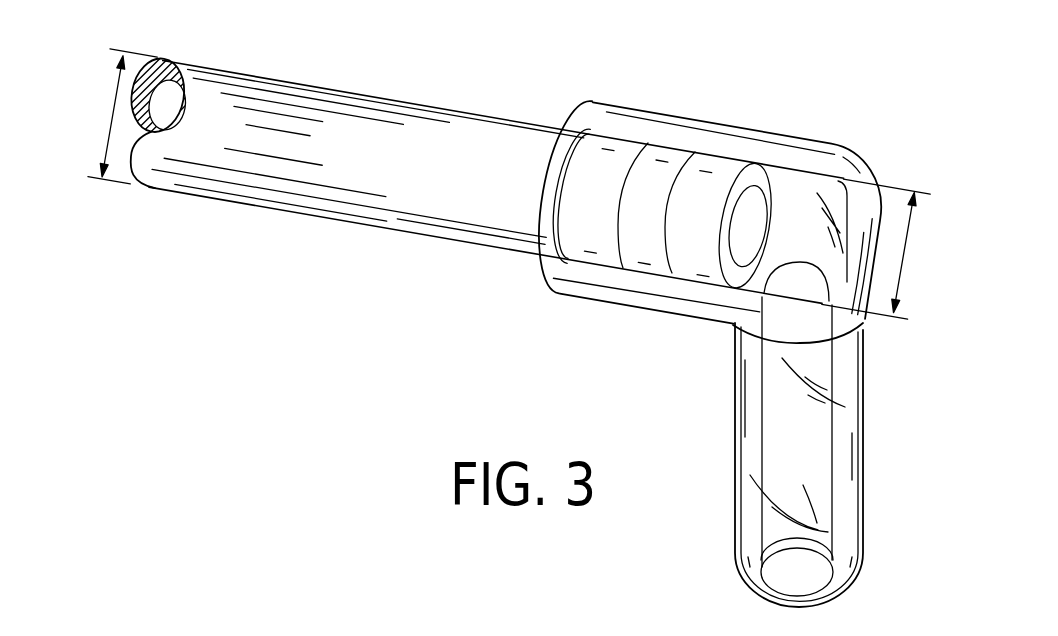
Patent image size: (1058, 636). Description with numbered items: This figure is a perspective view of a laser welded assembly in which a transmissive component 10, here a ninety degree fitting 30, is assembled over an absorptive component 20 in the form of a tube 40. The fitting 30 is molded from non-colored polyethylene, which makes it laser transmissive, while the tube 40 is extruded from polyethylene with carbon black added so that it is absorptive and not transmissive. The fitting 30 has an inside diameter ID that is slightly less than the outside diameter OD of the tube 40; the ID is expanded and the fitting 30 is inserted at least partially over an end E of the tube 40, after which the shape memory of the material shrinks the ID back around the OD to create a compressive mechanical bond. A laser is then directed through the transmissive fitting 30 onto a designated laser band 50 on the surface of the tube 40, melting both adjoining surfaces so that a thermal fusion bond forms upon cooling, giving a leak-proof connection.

The transmissive component 10 is at (674, 133).
The absorptive component 20 is at (462, 128).
The fitting 30 is at (810, 150).
The tube 40 is at (317, 123).
The laser band 50 is at (637, 242).
The end E is at (786, 214).
The outside diameter OD is at (112, 116).
The inside diameter ID is at (906, 244).